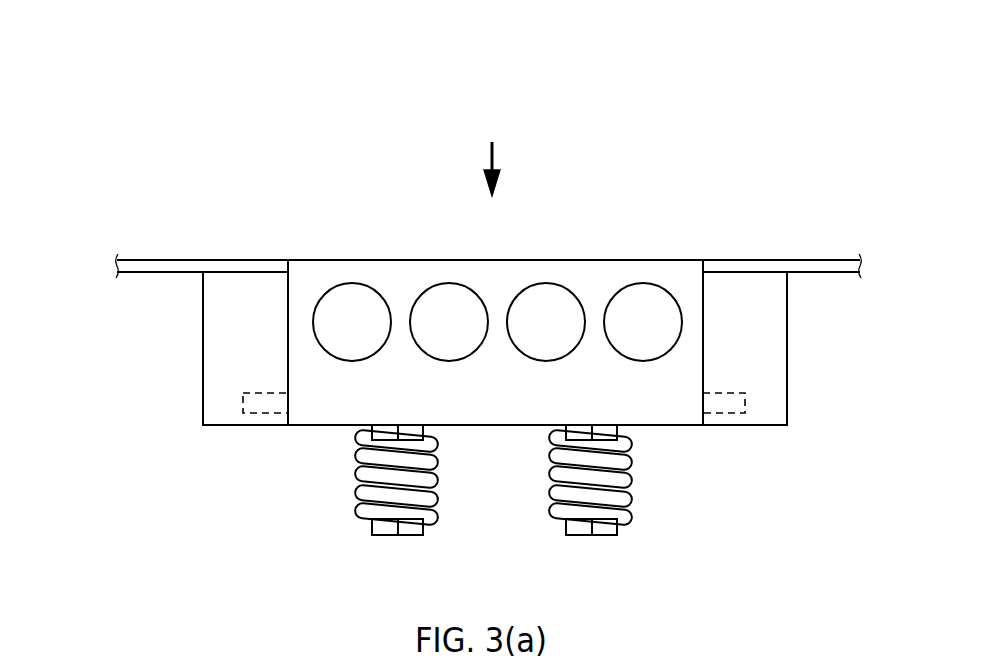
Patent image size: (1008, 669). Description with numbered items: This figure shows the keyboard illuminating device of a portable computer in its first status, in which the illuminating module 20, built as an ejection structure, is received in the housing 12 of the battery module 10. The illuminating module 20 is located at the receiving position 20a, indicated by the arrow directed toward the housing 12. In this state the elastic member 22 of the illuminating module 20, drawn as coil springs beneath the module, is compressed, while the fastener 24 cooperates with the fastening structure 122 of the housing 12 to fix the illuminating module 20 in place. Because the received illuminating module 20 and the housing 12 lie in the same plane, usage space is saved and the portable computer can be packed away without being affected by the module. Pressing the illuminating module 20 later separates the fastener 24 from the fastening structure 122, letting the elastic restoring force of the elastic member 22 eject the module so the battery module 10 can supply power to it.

The battery module 10 is at (128, 169).
The housing 12 is at (778, 268).
The fastening structure 122 is at (238, 368).
The illuminating module 20 is at (363, 272).
The receiving position 20a is at (568, 114).
The elastic member 22 is at (552, 482).
The fastener 24 is at (264, 405).